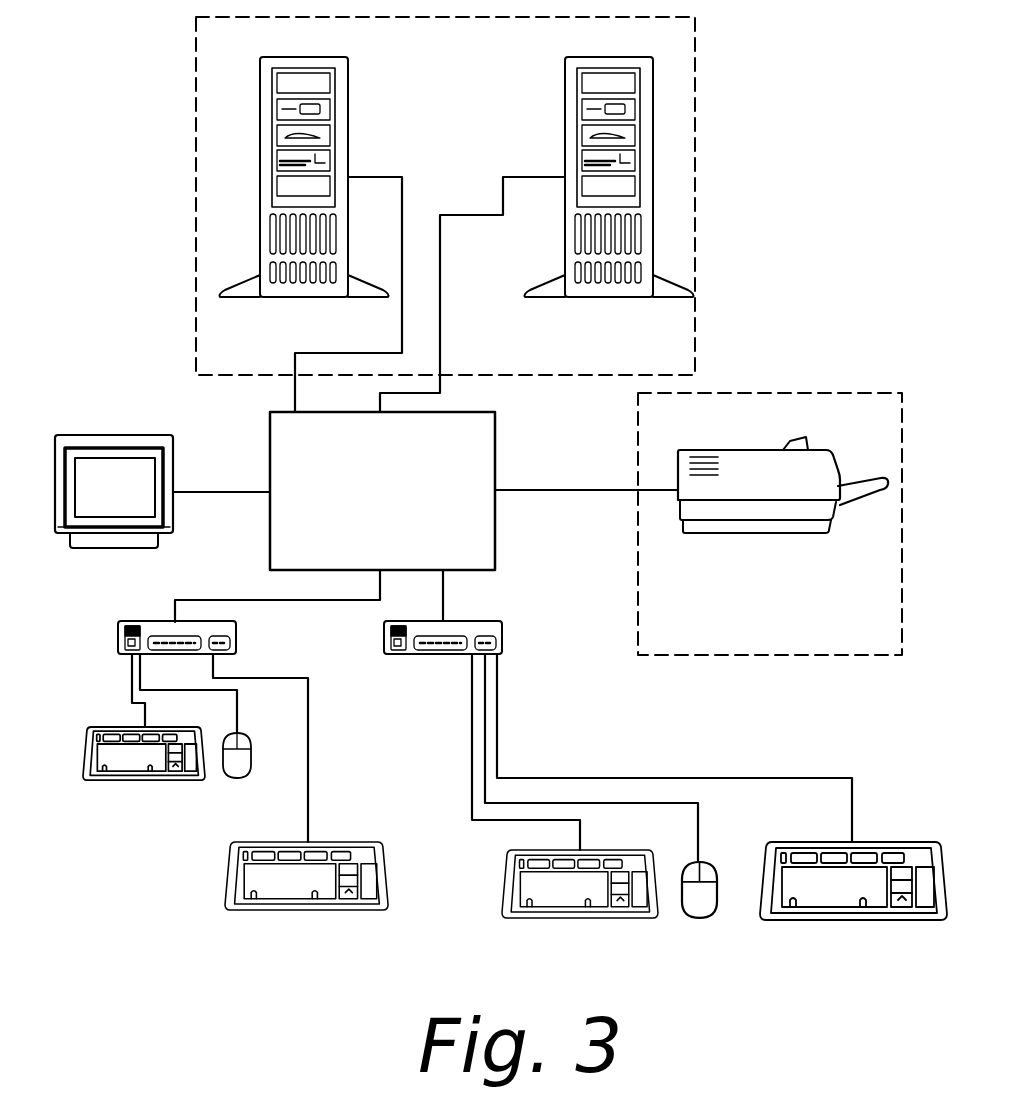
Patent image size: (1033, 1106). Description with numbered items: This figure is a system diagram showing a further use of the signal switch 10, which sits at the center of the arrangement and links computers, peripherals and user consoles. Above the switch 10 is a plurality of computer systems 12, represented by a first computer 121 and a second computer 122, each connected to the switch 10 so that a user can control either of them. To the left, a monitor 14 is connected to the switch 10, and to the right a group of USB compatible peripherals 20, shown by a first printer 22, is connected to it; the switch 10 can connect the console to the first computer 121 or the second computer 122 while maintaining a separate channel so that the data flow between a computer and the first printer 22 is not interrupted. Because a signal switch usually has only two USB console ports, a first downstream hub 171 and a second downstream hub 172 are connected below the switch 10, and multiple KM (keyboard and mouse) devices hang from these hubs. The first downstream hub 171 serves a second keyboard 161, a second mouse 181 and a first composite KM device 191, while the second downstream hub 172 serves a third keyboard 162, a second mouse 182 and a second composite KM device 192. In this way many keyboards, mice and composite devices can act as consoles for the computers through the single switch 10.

The signal switch 10 is at (382, 491).
The plurality of computer systems 12 is at (445, 196).
The first computer 121 is at (304, 194).
The second computer 122 is at (609, 194).
The monitor 14 is at (114, 508).
The USB compatible peripherals 20 is at (770, 524).
The first printer 22 is at (783, 502).
The first downstream hub 171 is at (177, 652).
The second downstream hub 172 is at (443, 652).
The second keyboard 161 is at (144, 772).
The second mouse 181 is at (237, 775).
The first composite KM device 191 is at (306, 896).
The third keyboard 162 is at (580, 902).
The second mouse 182 is at (698, 908).
The second composite KM device 192 is at (853, 898).